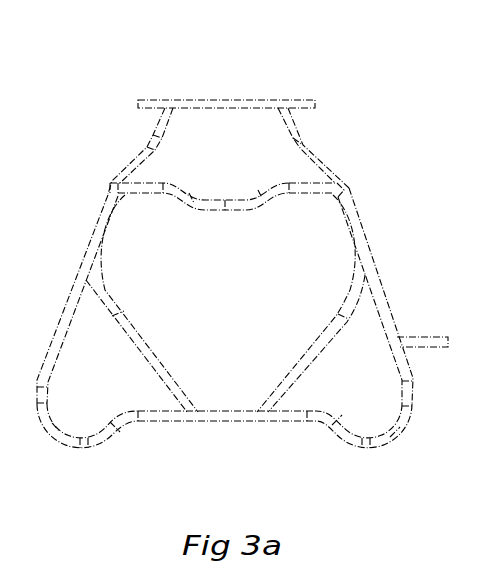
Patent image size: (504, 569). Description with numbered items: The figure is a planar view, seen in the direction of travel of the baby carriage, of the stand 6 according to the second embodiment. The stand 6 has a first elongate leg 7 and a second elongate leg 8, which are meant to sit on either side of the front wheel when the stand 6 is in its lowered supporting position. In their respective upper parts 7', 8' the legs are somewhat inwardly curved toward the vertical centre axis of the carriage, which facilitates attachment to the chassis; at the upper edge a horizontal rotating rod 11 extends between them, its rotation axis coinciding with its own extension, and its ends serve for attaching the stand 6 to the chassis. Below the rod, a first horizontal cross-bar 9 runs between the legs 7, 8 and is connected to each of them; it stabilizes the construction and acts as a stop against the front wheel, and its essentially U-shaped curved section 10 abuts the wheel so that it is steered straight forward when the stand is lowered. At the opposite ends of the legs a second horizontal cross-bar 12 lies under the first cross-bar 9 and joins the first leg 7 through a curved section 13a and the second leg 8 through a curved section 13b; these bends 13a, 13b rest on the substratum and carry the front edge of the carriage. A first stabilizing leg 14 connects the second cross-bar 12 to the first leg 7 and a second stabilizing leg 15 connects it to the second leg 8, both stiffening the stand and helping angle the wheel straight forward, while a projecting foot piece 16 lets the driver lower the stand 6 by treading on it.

The stand 6 is at (409, 202).
The first elongate leg 7 is at (69, 299).
The upper part of first elongate leg 7' is at (125, 133).
The second elongate leg 8 is at (395, 297).
The upper part of second elongate leg 8' is at (325, 130).
The first horizontal cross-bar 9 is at (305, 193).
The curved section 10 is at (212, 200).
The horizontal rotating rod 11 is at (217, 98).
The second horizontal cross-bar 12 is at (284, 418).
The curved section 13a is at (75, 445).
The curved section 13b is at (374, 445).
The first stabilizing leg 14 is at (143, 350).
The second stabilizing leg 15 is at (285, 373).
The projecting foot piece 16 is at (432, 352).